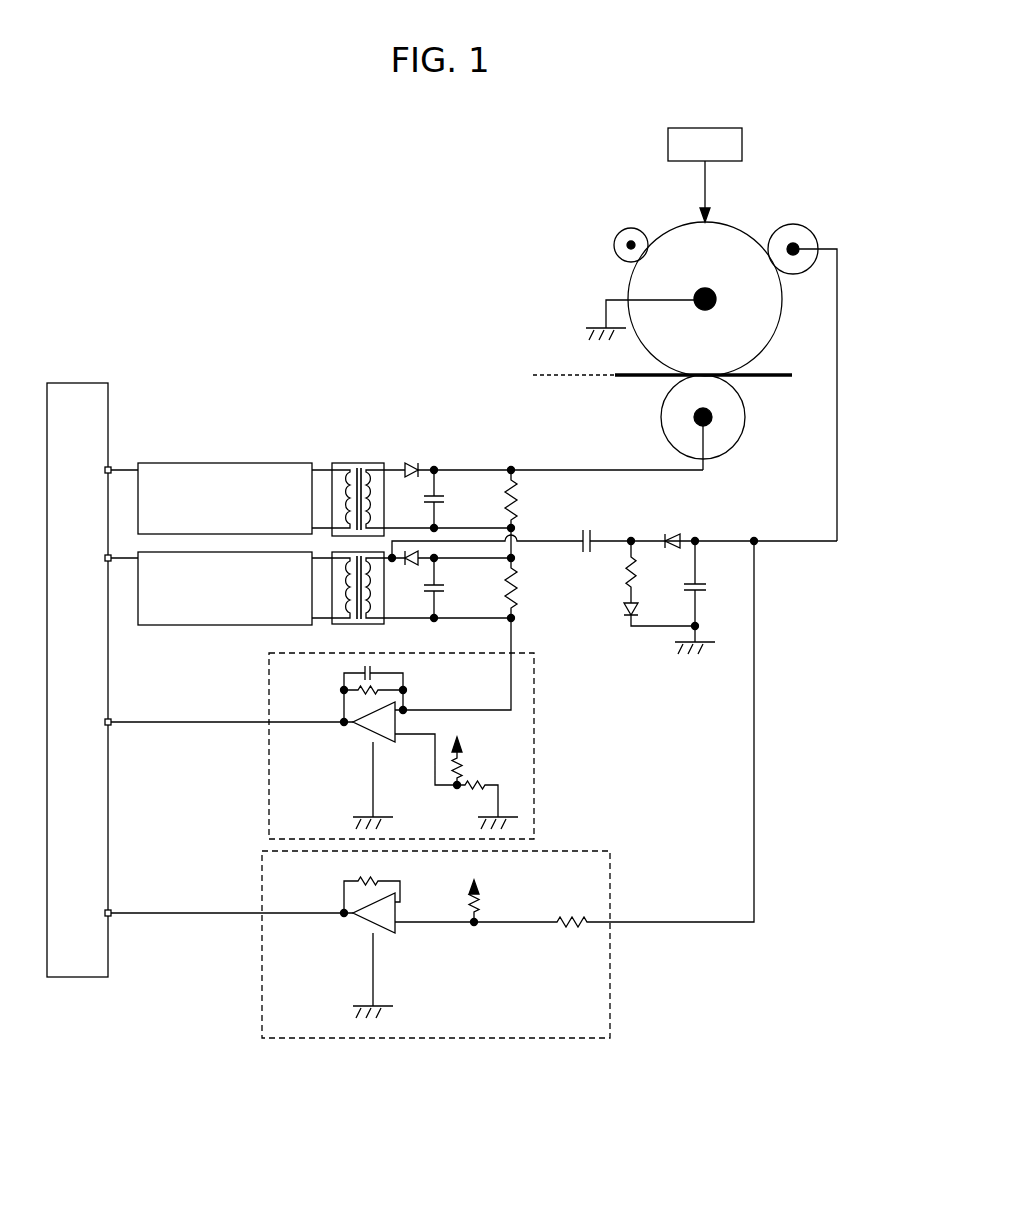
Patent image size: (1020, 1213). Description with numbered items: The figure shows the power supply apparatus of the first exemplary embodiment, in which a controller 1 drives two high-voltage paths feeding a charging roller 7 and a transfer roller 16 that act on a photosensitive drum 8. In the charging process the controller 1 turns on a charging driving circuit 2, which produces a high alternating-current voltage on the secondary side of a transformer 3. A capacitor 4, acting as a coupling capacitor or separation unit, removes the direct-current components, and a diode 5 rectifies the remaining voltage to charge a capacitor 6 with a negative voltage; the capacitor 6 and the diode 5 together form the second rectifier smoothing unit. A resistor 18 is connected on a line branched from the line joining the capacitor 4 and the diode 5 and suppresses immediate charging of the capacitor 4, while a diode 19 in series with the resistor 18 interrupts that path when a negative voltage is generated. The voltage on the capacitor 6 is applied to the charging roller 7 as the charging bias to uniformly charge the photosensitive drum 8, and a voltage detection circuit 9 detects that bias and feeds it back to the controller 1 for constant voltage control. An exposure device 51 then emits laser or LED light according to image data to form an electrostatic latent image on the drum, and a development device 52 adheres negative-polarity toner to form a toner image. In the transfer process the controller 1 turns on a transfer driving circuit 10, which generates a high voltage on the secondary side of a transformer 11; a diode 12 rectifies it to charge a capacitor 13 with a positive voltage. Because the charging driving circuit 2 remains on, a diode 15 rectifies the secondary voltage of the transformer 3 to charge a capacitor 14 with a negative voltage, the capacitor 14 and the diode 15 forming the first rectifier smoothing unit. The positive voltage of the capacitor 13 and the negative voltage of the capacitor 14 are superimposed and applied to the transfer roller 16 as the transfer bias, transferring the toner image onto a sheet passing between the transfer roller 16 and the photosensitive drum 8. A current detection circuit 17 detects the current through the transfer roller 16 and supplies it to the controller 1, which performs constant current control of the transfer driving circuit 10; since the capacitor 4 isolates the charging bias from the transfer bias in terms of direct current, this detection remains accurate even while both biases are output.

The controller 1 is at (80, 383).
The charging driving circuit 2 is at (312, 626).
The transformer 3 is at (384, 625).
The capacitor 4 is at (590, 528).
The diode 5 is at (676, 533).
The capacitor 6 is at (706, 592).
The charging roller 7 is at (800, 226).
The photosensitive drum 8 is at (745, 225).
The voltage detection circuit 9 is at (610, 965).
The transfer driving circuit 10 is at (276, 463).
The transformer 11 is at (358, 463).
The diode 12 is at (414, 463).
The capacitor 13 is at (448, 500).
The capacitor 14 is at (448, 590).
The diode 15 is at (410, 568).
The transfer roller 16 is at (743, 438).
The current detection circuit 17 is at (537, 768).
The resistor 18 is at (626, 579).
The diode 19 is at (625, 614).
The exposure device 51 is at (722, 128).
The development device 52 is at (640, 228).